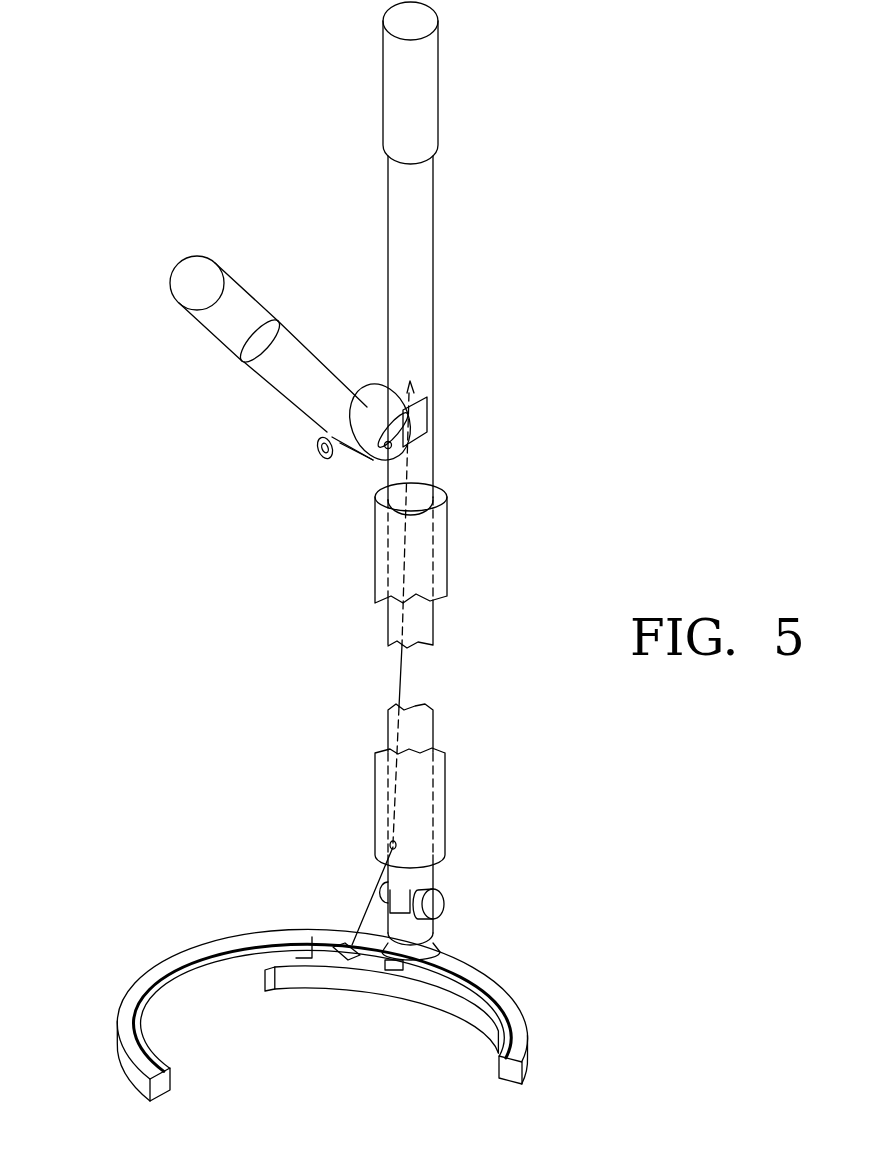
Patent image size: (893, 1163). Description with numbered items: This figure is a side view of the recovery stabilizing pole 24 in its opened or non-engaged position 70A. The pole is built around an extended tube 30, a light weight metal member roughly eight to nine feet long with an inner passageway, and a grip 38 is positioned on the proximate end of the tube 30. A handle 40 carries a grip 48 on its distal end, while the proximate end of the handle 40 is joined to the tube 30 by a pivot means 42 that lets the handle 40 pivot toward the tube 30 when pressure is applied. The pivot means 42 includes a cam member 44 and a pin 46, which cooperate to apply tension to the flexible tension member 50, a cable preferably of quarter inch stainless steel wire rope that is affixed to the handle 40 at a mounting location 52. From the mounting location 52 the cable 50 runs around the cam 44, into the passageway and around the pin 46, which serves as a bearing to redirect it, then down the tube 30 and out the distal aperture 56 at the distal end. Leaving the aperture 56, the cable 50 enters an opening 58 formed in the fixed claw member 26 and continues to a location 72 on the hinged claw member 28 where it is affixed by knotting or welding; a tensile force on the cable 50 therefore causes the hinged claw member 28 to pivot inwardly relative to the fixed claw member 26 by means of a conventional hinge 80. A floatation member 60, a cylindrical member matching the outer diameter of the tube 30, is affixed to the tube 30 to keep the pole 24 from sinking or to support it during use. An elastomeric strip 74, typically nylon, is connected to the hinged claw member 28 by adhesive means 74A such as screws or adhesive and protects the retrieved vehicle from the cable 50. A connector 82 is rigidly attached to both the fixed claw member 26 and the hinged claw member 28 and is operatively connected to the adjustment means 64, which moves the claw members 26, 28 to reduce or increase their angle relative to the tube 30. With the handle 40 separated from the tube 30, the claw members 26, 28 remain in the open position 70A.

The recovery stabilizing pole 24 is at (572, 158).
The fixed claw member 26 is at (118, 1000).
The hinged claw member 28 is at (522, 1072).
The tube 30 is at (433, 637).
The grip 38 is at (383, 73).
The handle 40 is at (312, 355).
The pivot means 42 is at (378, 470).
The cam member 44 is at (368, 460).
The pin 46 is at (412, 388).
The grip 48 is at (203, 330).
The flexible tension member 50 is at (436, 466).
The mounting location 52 is at (318, 456).
The distal aperture 56 is at (405, 838).
The opening 58 is at (333, 950).
The floatation member 60 is at (375, 566).
The adjustment means 64 is at (436, 896).
The open or non-engaged position 70A is at (305, 1071).
The location 72 is at (490, 1000).
The elastomeric strip 74 is at (438, 998).
The adhesive means 74A is at (505, 1022).
The hinge 80 is at (447, 958).
The connector 82 is at (425, 937).